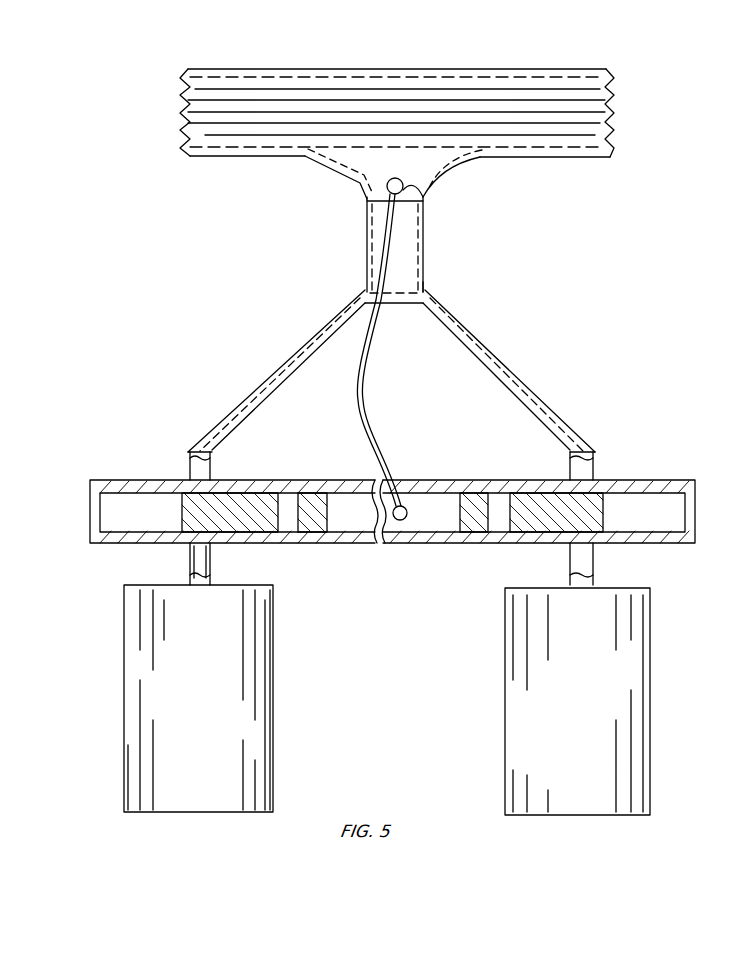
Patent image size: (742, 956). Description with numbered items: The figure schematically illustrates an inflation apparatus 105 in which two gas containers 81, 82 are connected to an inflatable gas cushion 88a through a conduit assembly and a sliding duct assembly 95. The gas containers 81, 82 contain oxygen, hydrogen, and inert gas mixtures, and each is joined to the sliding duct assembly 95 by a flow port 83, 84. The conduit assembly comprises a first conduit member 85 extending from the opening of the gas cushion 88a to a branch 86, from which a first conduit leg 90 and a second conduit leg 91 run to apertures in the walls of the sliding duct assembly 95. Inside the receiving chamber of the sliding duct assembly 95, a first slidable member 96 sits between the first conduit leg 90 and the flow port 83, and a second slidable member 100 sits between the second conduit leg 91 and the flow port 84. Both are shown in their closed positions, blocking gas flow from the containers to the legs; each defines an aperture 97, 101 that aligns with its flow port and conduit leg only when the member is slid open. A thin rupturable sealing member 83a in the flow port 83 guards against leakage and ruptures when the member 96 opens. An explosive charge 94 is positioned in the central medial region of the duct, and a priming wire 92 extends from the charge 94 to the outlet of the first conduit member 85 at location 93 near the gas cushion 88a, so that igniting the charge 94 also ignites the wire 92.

The inflation apparatus 105 is at (220, 236).
The bladder 88a is at (560, 158).
The location 93 is at (420, 201).
The priming wire 92 is at (403, 245).
The first conduit member 85 is at (412, 272).
The branch 86 is at (424, 285).
The first conduit leg 90 is at (277, 370).
The second conduit leg 91 is at (530, 387).
The sliding duct assembly 95 is at (138, 480).
The first slidable member 96 is at (228, 500).
The aperture 97 is at (285, 505).
The aperture 101 is at (494, 507).
The explosive charge 94 is at (406, 494).
The second slidable member 100 is at (598, 504).
The flow port 83 is at (192, 557).
The rupturable sealing member 83a is at (208, 553).
The flow port 84 is at (593, 562).
The gas container 81 is at (265, 685).
The gas container 82 is at (643, 673).